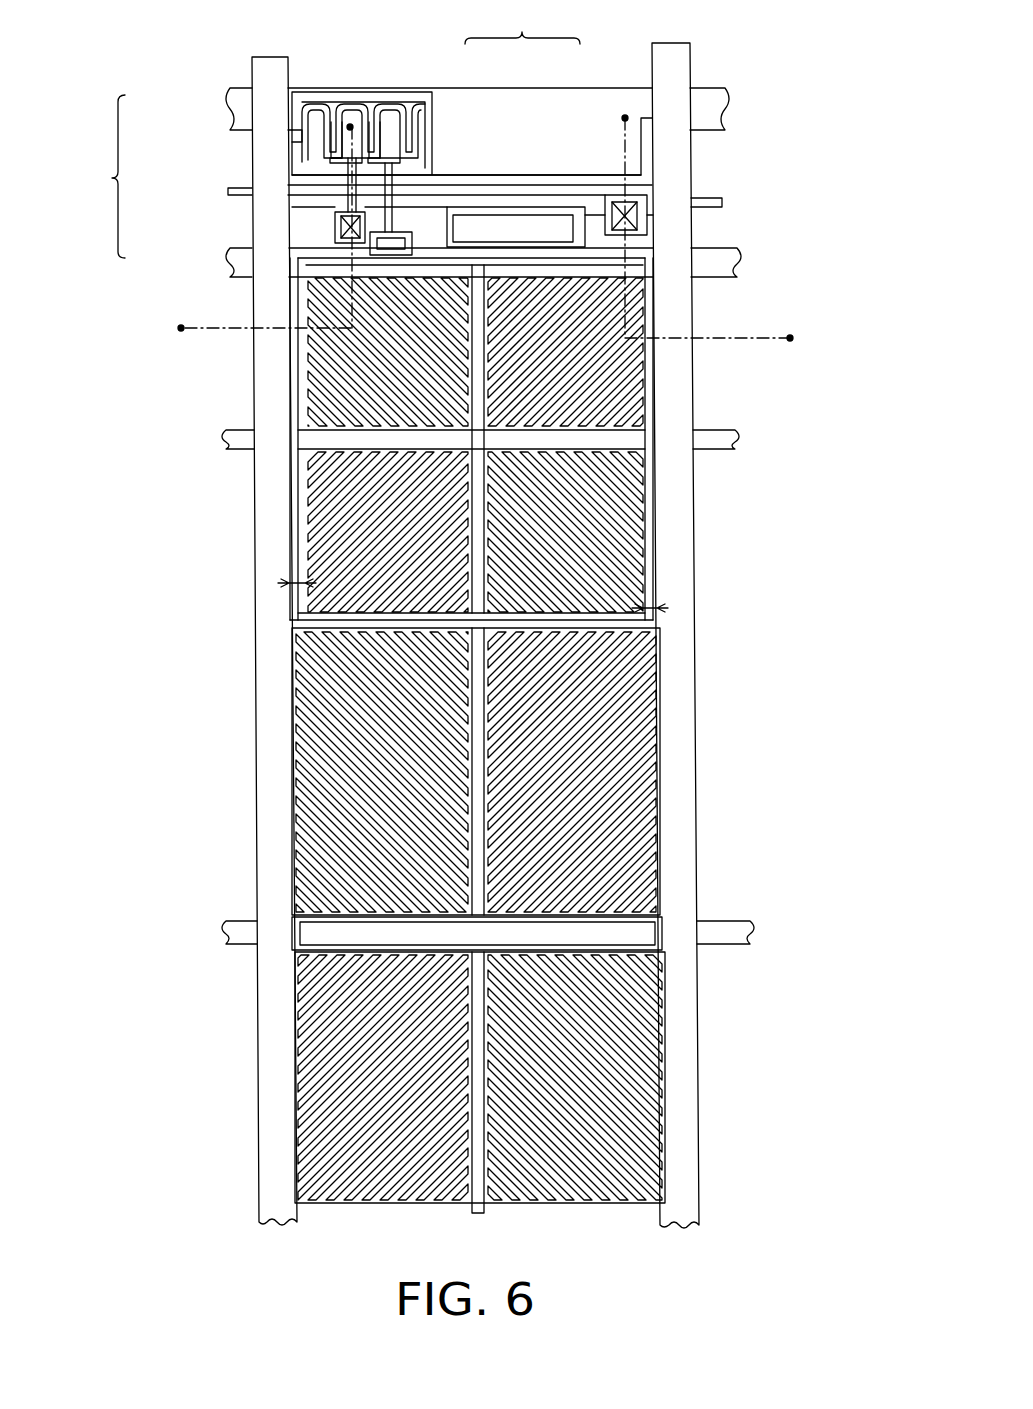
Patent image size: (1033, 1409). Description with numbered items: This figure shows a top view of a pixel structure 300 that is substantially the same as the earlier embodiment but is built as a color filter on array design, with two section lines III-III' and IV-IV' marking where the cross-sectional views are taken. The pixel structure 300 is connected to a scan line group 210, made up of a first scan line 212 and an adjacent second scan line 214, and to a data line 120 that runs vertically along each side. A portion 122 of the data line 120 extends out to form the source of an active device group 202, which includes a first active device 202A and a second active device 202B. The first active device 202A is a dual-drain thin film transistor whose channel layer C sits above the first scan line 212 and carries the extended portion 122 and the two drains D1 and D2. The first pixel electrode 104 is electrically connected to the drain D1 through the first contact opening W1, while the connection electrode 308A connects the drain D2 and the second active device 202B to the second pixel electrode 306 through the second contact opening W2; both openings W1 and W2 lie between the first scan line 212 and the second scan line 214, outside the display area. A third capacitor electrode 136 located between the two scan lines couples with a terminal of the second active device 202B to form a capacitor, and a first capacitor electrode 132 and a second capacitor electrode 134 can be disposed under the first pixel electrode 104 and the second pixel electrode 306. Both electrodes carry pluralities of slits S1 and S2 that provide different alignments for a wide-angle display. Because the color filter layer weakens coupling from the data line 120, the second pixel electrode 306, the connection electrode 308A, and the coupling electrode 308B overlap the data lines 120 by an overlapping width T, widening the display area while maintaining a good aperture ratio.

The pixel structure 300 is at (636, 1232).
The data line 120 is at (275, 690).
The extended portion of the data line 122 is at (318, 125).
The first scan line 212 is at (234, 117).
The second scan line 214 is at (234, 262).
The scan line group 210 is at (100, 176).
The third capacitor electrode 136 is at (716, 200).
The first capacitor electrode 132 is at (216, 432).
The second capacitor electrode 134 is at (235, 930).
The first pixel electrode 104 is at (630, 480).
The active device group 202 is at (522, 22).
The first active device 202A is at (432, 128).
The second active device 202B is at (436, 173).
The channel layer C is at (422, 118).
The drain D1 is at (389, 213).
The drain D2 is at (333, 128).
The first contact opening W1 is at (640, 215).
The second contact opening W2 is at (343, 228).
The slits S1 is at (355, 375).
The slits S2 is at (340, 848).
The second pixel electrode 306 is at (660, 740).
The connection electrode 308A is at (290, 528).
The coupling electrode 308B is at (658, 420).
The overlapping width T is at (290, 580).
The section line III-III' III is at (361, 180).
The section line III- III' is at (243, 331).
The section line IV-IV' IV is at (634, 194).
The section line IV- IV' is at (727, 339).